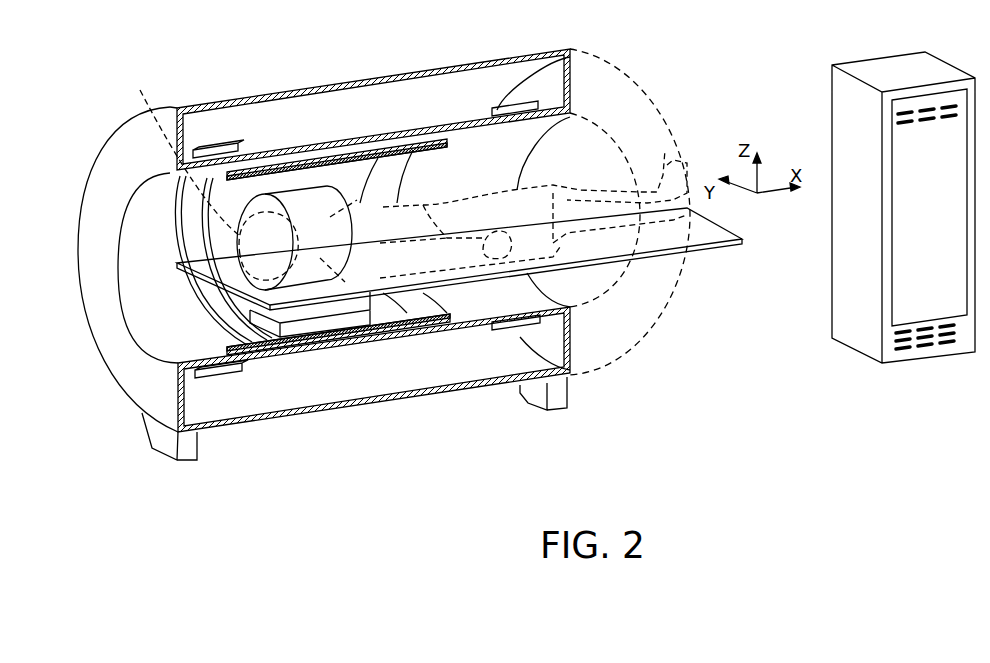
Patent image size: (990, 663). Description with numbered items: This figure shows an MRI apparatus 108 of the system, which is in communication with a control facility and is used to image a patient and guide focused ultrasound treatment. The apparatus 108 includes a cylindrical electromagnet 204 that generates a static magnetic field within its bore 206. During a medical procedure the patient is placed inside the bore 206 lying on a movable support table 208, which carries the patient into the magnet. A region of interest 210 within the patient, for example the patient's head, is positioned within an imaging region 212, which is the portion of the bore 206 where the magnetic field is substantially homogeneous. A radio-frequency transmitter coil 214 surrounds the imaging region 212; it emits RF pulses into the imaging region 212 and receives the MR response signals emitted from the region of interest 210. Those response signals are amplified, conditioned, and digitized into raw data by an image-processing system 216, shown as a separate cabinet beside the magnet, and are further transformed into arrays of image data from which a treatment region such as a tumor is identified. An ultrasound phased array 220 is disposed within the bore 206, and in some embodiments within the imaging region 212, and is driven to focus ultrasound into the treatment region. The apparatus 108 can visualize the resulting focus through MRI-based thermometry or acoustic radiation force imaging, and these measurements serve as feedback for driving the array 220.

The MRI apparatus 108 is at (543, 457).
The cylindrical electromagnet 204 is at (373, 128).
The bore 206 is at (597, 283).
The movable support table 208 is at (712, 248).
The region of interest 210 is at (401, 173).
The imaging region 212 is at (282, 192).
The radio-frequency transmitter coil 214 is at (234, 322).
The image-processing system 216 is at (842, 338).
The ultrasound phased array 220 is at (330, 312).